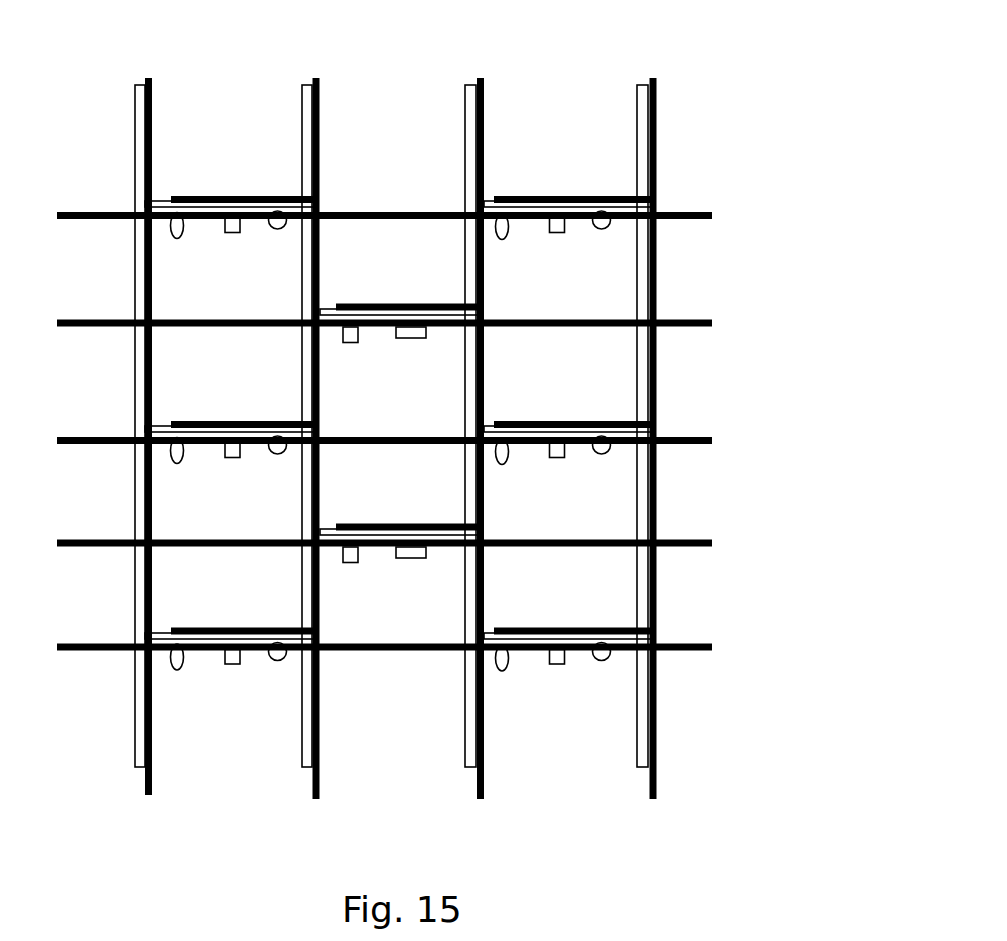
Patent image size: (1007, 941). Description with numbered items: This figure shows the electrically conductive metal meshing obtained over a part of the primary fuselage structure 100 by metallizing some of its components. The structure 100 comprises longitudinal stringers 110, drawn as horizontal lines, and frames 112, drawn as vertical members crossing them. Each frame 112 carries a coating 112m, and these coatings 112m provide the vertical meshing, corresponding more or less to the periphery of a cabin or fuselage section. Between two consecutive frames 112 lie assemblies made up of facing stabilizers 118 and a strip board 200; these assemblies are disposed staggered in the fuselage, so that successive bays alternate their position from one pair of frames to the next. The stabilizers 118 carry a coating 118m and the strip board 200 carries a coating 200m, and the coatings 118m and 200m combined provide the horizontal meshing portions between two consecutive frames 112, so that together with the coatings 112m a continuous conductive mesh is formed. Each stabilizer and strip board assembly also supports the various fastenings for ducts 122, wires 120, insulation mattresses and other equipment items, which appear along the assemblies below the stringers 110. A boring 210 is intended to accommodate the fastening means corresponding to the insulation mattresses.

The primary fuselage structure 100 is at (757, 72).
The longitudinal stringer 110 is at (384, 416).
The frame 112 is at (138, 88).
The coating of frames 112m is at (152, 147).
The stabilizer 118 is at (399, 420).
The coating of stabilizers 118m is at (266, 197).
The strip board 200 is at (374, 352).
The coating of strip board 200m is at (563, 627).
The wire 120 is at (276, 454).
The duct 122 is at (178, 463).
The boring 210 is at (232, 458).